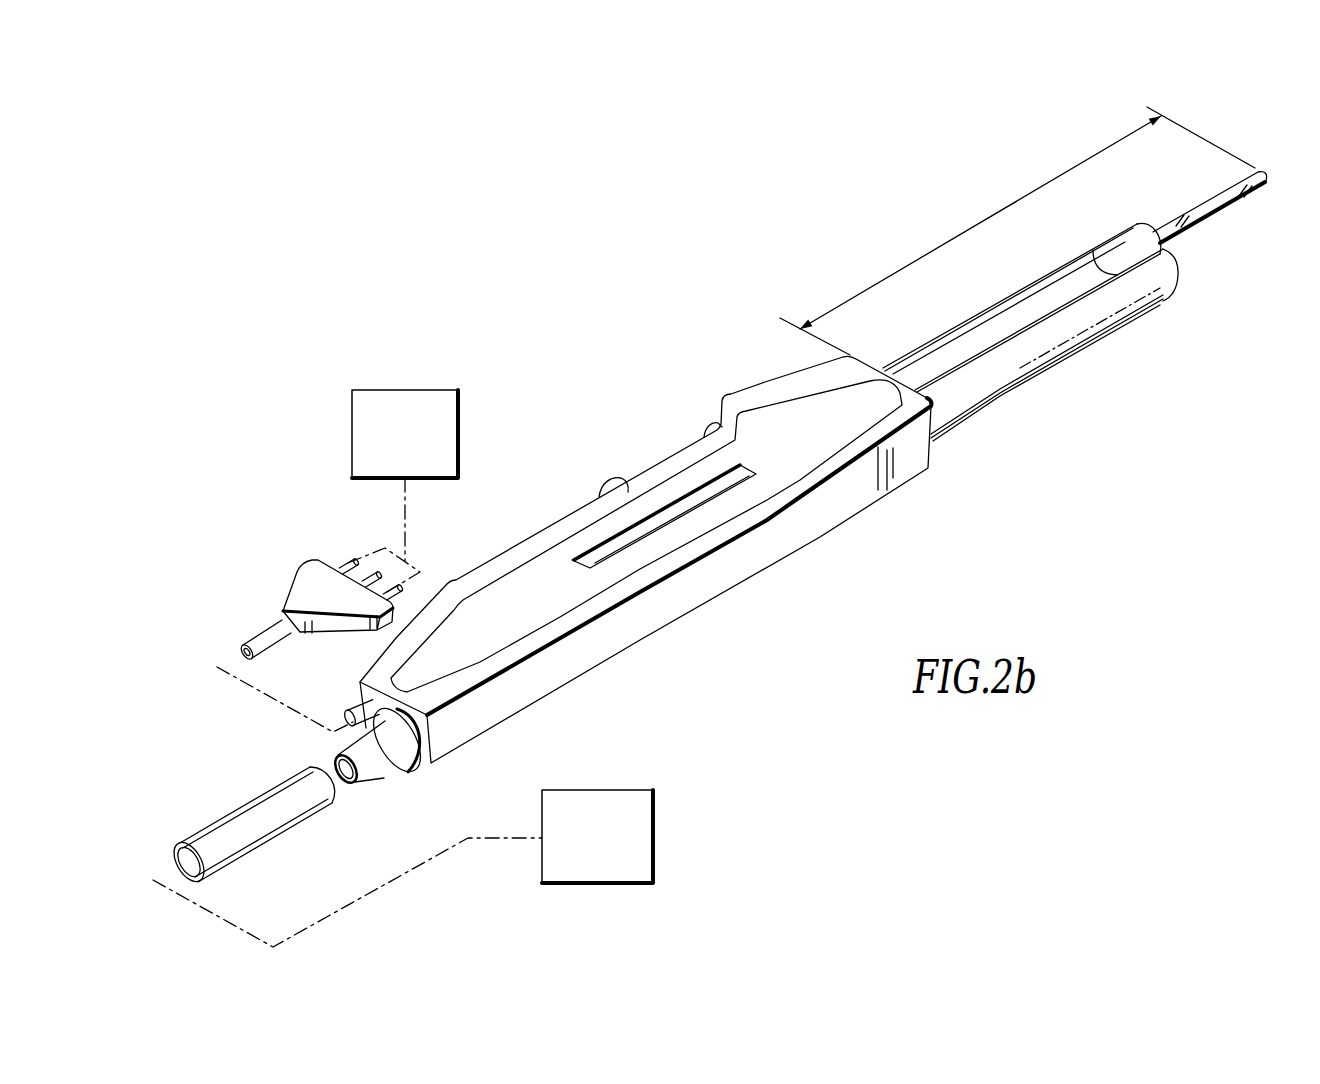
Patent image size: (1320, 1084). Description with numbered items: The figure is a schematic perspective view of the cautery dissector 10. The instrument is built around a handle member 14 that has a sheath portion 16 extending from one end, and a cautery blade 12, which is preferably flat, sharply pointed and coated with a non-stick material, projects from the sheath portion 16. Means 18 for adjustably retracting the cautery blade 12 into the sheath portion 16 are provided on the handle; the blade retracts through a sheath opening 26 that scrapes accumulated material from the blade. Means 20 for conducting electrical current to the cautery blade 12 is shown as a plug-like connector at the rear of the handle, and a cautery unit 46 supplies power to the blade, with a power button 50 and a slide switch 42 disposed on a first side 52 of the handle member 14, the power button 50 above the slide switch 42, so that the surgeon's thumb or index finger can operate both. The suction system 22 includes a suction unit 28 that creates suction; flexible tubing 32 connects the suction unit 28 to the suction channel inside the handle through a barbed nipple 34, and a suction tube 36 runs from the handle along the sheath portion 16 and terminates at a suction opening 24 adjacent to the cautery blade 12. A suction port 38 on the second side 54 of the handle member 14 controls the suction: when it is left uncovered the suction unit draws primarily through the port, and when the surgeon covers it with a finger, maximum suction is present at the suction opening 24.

The cautery dissector 10 is at (1023, 405).
The cautery blade 12 is at (1218, 202).
The handle member 14 is at (822, 547).
The sheath portion 16 is at (997, 300).
The means for adjustably retracting the cautery blade 18 is at (655, 433).
The means for conducting electrical current 20 is at (268, 570).
The suction system 22 is at (530, 827).
The suction opening 24 is at (1175, 272).
The sheath opening 26 is at (1113, 246).
The suction unit 28 is at (565, 885).
The flexible tubing 32 is at (243, 830).
The barbed nipple 34 is at (362, 767).
The suction tube 36 is at (1107, 333).
The suction port 38 is at (748, 472).
The slide switch 42 is at (610, 478).
The cautery unit 46 is at (352, 437).
The power button 50 is at (705, 424).
The first side of the handle 52 is at (524, 540).
The second side of the handle 54 is at (710, 580).